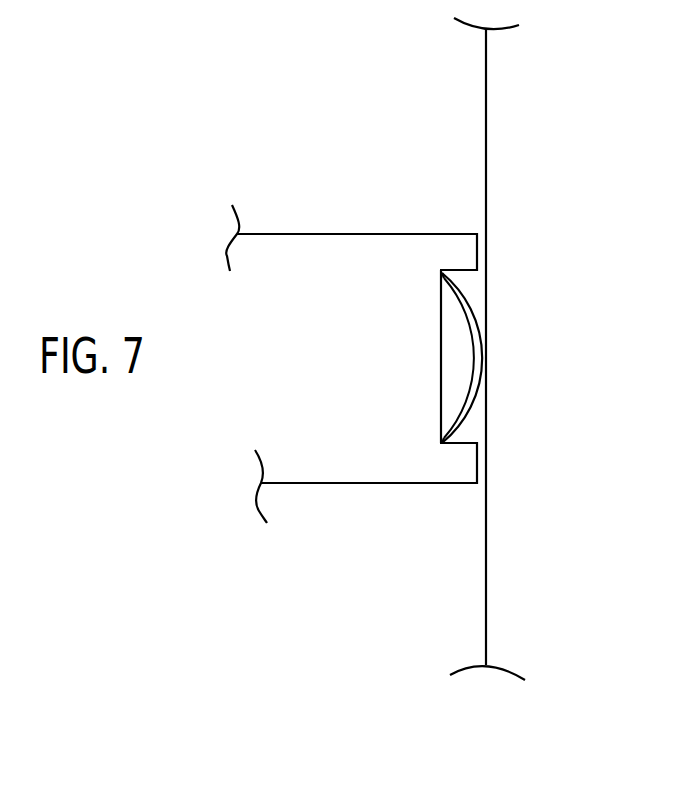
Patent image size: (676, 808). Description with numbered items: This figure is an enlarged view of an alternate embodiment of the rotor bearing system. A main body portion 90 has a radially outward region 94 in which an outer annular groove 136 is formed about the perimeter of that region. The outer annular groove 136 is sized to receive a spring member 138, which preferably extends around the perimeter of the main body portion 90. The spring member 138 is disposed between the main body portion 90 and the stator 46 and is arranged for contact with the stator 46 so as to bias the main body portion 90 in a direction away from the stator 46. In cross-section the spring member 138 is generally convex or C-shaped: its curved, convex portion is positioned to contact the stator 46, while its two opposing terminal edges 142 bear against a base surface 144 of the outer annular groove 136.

The stator 46 is at (502, 597).
The main body portion 90 is at (351, 387).
The radially outward region 94 is at (378, 472).
The outer annular groove 136 is at (468, 277).
The spring member 138 is at (473, 403).
The terminal edges 142 is at (439, 274).
The base surface 144 is at (440, 382).